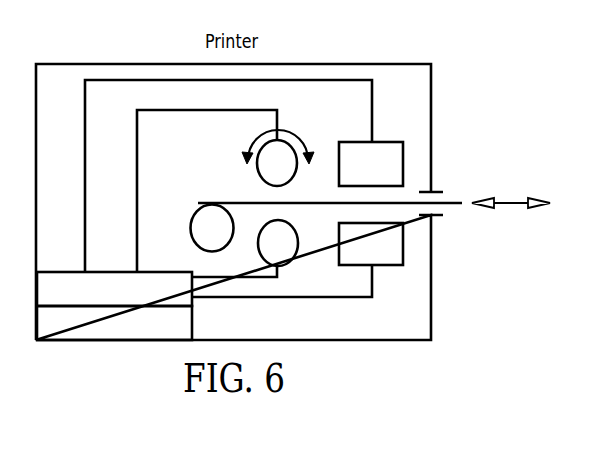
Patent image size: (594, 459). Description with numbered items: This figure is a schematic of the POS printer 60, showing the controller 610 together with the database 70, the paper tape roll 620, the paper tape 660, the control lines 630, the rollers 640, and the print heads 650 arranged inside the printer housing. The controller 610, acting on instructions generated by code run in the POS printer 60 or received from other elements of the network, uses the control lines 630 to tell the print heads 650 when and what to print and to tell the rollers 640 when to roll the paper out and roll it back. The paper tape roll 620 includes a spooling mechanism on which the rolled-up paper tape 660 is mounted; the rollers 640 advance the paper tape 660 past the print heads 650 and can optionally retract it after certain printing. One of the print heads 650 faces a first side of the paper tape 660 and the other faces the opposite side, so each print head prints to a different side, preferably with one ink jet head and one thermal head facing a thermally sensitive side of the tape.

The POS printer 60 is at (383, 64).
The controller 610 is at (185, 301).
The database 70 is at (178, 333).
The paper tape roll 620 is at (227, 240).
The control lines 630 is at (85, 148).
The rollers 640 is at (292, 175).
The print heads 650 is at (388, 176).
The paper tape 660 is at (233, 203).